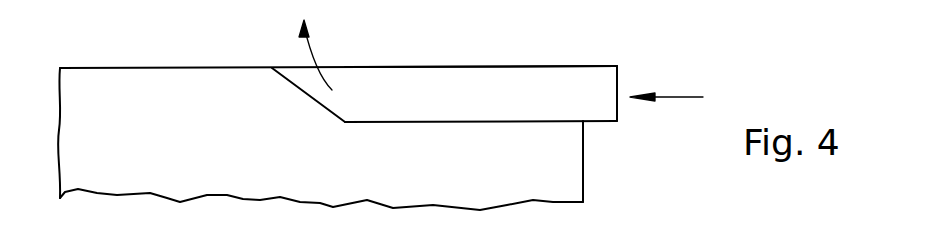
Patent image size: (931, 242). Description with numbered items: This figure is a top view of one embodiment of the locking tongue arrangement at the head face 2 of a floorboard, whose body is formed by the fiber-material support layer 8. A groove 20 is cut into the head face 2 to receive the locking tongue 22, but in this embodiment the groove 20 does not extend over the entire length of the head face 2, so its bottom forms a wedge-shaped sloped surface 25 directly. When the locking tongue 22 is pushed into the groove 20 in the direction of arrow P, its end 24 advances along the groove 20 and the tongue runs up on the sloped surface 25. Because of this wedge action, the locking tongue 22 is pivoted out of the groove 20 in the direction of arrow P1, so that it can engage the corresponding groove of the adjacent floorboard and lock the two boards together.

The head face 2 is at (120, 68).
The sloped surface 25 is at (311, 80).
The groove 20 is at (443, 120).
The locking tongue 22 is at (505, 78).
The end of the locking tongue 24 is at (598, 77).
The support layer 8 is at (565, 170).
The arrow P1 is at (328, 49).
The arrow P is at (666, 79).